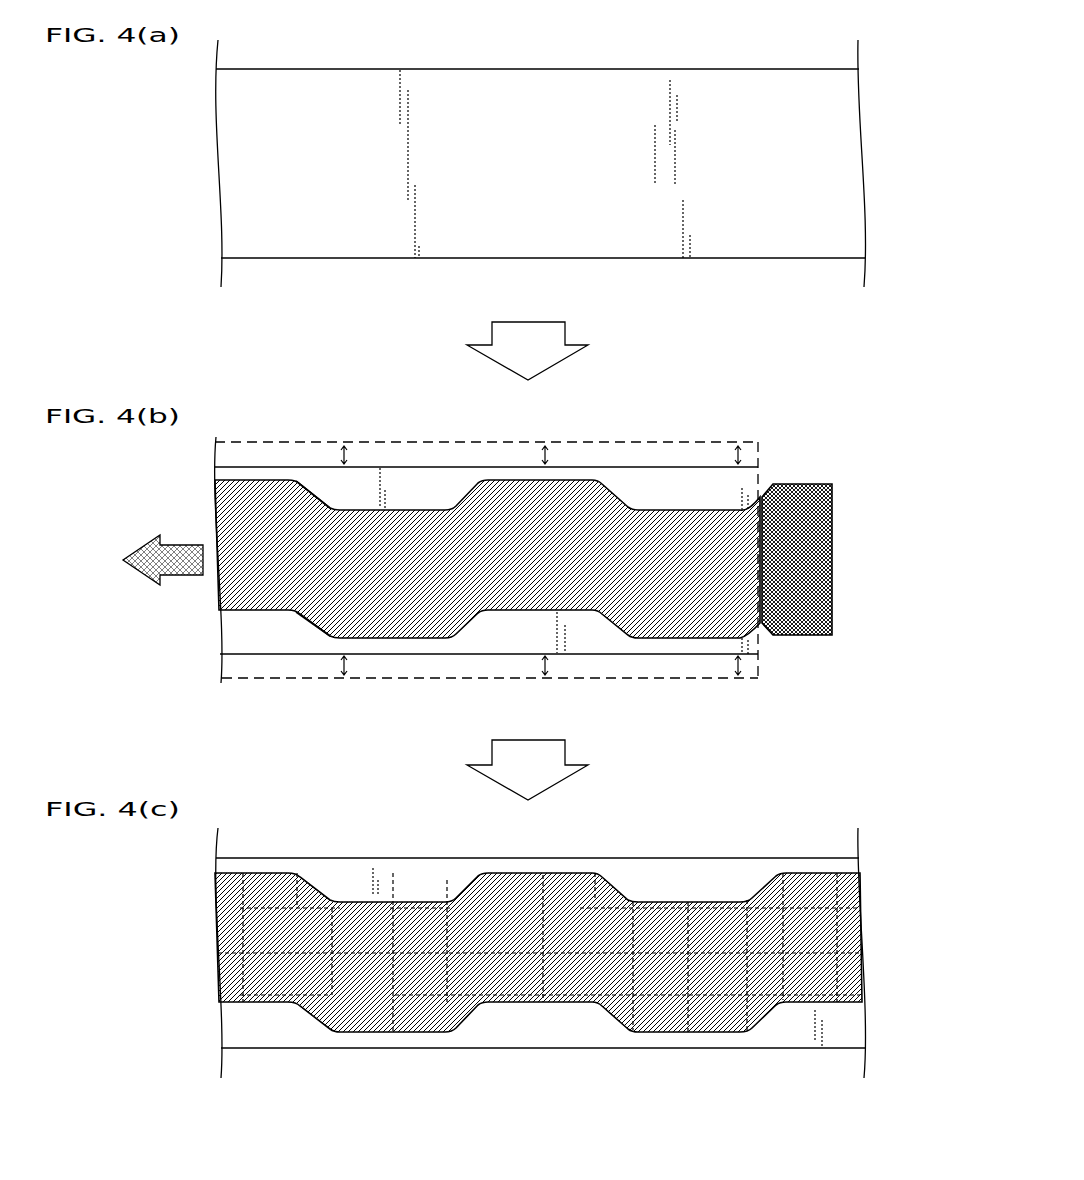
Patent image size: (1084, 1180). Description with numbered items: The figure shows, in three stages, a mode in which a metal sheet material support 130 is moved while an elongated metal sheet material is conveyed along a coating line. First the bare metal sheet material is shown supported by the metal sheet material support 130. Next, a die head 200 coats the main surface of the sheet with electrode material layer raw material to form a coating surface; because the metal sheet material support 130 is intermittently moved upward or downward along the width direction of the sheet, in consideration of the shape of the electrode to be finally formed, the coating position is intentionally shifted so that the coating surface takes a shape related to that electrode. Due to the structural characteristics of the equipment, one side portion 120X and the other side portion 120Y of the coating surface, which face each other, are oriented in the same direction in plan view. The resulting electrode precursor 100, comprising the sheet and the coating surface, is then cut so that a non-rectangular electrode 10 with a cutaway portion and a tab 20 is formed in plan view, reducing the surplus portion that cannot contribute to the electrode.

The one side portion of the coating surface 120X is at (323, 487).
The other side portion of the coating surface 120Y is at (310, 628).
The metal sheet material support 130 is at (640, 456).
The die head 200 is at (807, 556).
The electrode precursor 100 is at (538, 887).
The tab 20 is at (818, 864).
The non-rectangular electrode 10 is at (723, 978).